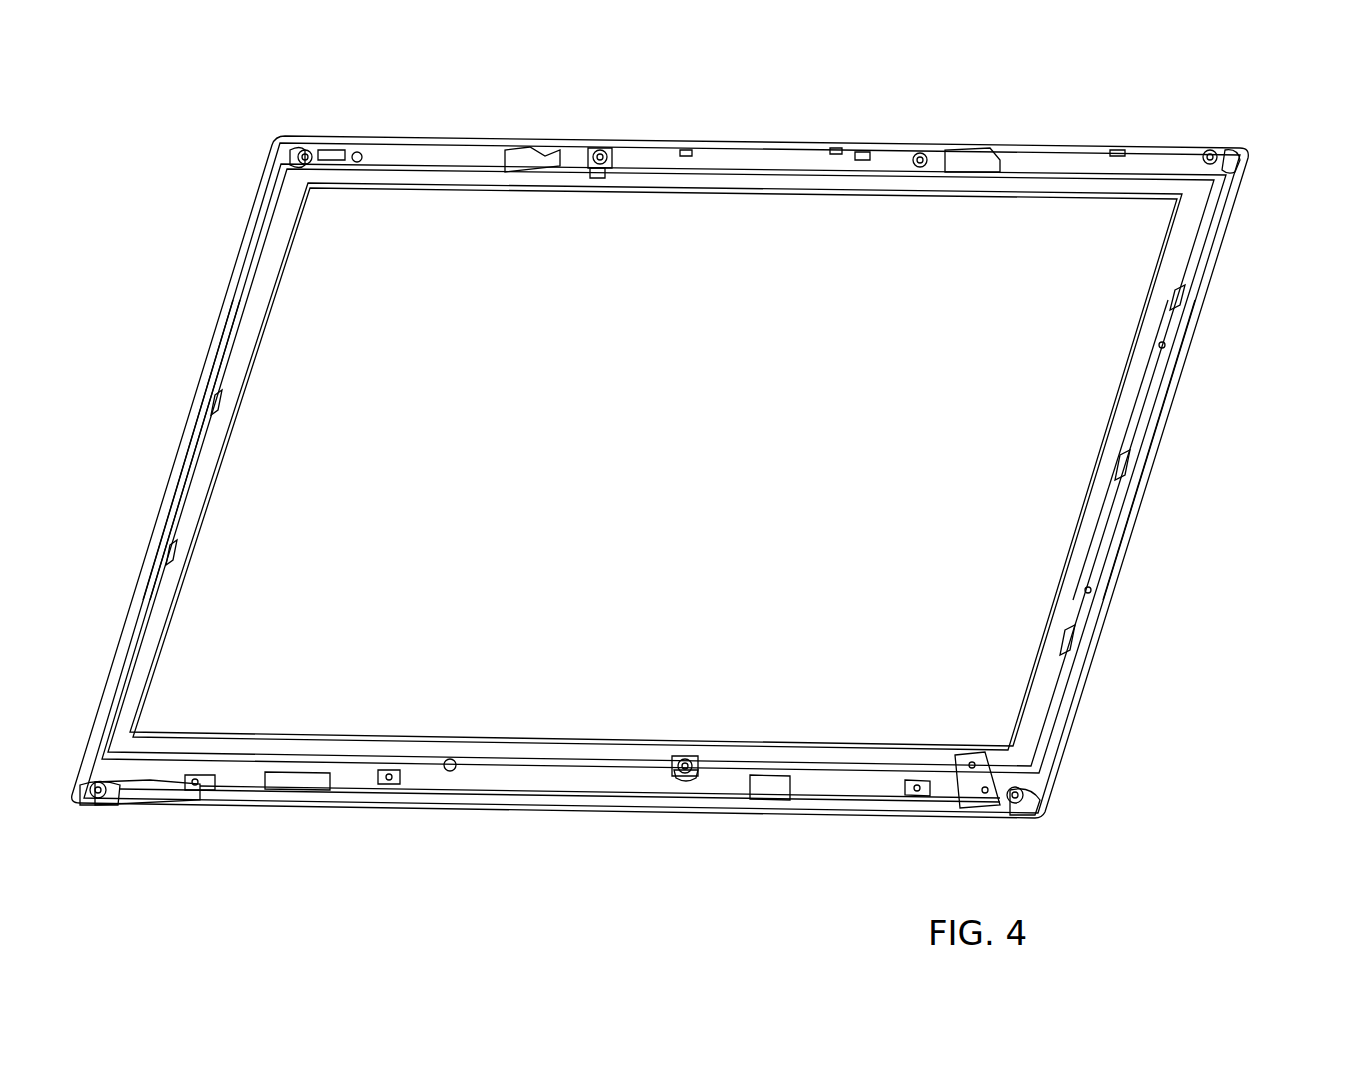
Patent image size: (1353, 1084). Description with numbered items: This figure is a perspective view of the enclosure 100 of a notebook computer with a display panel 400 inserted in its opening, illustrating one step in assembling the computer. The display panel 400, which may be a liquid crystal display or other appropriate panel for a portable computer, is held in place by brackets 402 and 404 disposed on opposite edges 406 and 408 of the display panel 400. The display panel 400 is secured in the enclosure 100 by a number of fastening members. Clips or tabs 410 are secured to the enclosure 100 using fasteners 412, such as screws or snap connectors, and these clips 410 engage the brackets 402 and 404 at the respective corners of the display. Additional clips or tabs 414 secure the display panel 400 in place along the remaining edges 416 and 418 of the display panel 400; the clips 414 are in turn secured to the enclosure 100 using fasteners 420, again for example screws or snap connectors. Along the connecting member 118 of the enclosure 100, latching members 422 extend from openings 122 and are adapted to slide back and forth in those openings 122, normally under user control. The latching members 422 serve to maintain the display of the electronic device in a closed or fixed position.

The enclosure 100 is at (1232, 150).
The connecting member 118 is at (862, 140).
The openings 122 is at (995, 148).
The display panel 400 is at (1093, 427).
The bracket 402 is at (1162, 343).
The bracket 404 is at (210, 410).
The edge of display panel 406 is at (1097, 508).
The edge of display panel 408 is at (180, 547).
The clips or tabs 410 is at (285, 148).
The fasteners 412 is at (305, 150).
The clips or tabs 414 is at (600, 178).
The edge of display panel 416 is at (586, 752).
The edge of display panel 418 is at (733, 178).
The fasteners 420 is at (605, 150).
The latching members 422 is at (522, 143).